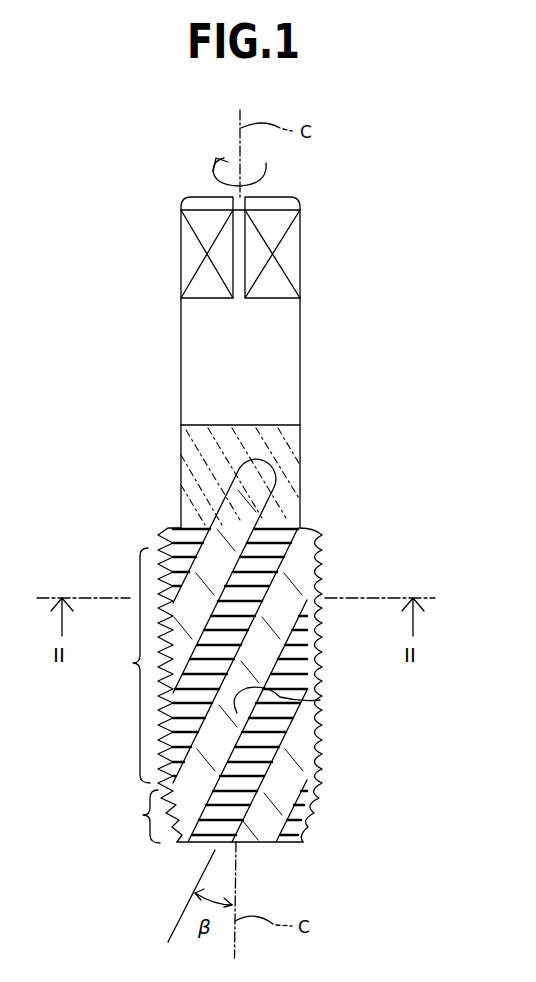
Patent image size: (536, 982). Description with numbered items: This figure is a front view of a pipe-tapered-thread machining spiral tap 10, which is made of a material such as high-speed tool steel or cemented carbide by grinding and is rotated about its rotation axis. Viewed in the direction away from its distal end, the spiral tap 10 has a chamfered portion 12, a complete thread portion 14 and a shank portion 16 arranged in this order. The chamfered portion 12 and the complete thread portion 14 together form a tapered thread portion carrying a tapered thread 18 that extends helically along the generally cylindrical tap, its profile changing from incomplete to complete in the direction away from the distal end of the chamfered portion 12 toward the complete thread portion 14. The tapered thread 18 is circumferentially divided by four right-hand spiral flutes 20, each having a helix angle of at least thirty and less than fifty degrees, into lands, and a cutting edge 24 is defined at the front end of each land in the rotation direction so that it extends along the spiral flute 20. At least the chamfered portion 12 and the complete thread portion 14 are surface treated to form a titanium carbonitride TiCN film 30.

The pipe-tapered-thread machining spiral tap 10 is at (418, 262).
The chamfered portion 12 is at (136, 816).
The complete thread portion 14 is at (126, 665).
The shank portion 16 is at (193, 357).
The tapered thread 18 is at (316, 630).
The spiral flute 20 is at (200, 580).
The cutting edge 24 is at (320, 700).
The titanium carbonitride TiCN film 30 is at (300, 456).